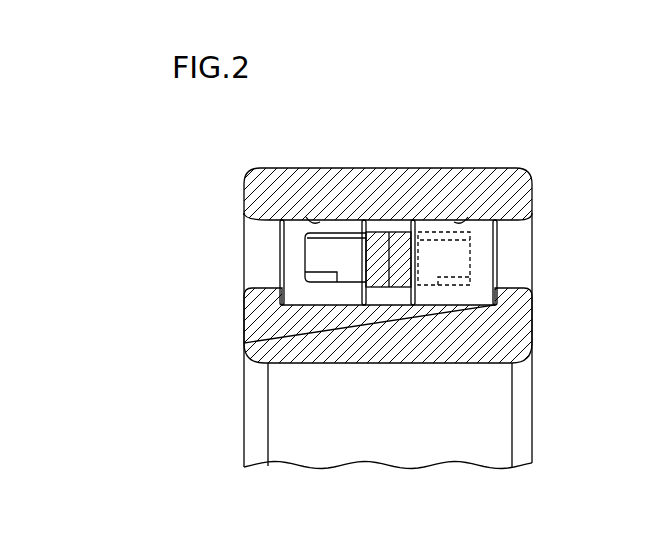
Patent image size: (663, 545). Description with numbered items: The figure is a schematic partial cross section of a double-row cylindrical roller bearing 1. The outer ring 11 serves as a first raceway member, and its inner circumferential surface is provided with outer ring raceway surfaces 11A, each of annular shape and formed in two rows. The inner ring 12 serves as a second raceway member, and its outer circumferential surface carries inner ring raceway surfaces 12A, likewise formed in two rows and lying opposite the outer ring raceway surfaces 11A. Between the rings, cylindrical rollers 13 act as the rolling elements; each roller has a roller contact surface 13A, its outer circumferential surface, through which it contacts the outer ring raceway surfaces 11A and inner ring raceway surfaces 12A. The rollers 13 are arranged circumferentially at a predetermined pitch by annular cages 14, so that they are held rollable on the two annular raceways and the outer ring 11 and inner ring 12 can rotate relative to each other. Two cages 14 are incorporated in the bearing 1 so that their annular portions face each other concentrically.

The double-row cylindrical roller bearing 1 is at (556, 131).
The outer ring 11 is at (386, 231).
The outer ring raceway surface 11A is at (311, 217).
The inner ring 12 is at (502, 329).
The inner ring raceway surface 12A is at (300, 300).
The cylindrical roller 13 is at (293, 258).
The roller contact surface 13A is at (277, 207).
The cage 14 is at (347, 253).